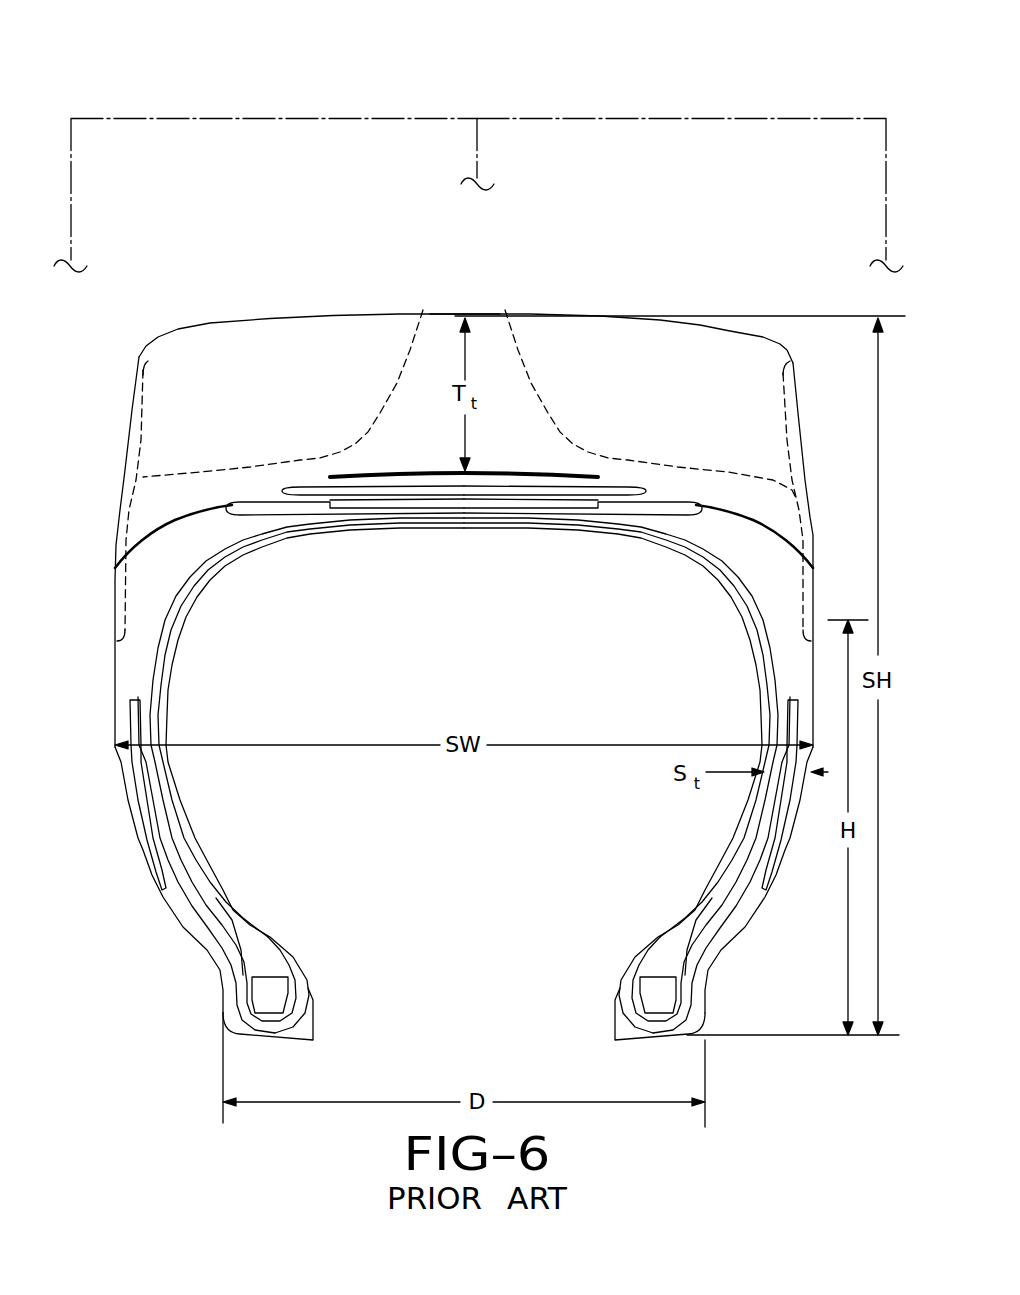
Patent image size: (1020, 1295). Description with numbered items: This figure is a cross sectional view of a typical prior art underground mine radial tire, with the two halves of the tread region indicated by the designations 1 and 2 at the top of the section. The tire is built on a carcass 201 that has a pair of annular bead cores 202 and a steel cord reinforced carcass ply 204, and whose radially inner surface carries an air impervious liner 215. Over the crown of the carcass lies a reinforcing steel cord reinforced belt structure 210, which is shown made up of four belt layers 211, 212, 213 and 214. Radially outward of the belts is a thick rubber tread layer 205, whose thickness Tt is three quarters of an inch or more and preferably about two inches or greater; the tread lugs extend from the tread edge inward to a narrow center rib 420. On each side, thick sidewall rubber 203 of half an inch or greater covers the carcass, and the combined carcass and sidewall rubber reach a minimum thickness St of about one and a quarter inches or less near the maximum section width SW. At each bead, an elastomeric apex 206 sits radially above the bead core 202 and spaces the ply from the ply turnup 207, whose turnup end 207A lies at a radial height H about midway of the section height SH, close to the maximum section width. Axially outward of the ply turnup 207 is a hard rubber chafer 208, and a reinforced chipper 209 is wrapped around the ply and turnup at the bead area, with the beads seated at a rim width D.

The tire tread region section 1 is at (229, 108).
The tire tread region section 2 is at (737, 108).
The carcass 201 is at (227, 872).
The bead core 202 is at (263, 989).
The sidewall rubber 203 is at (113, 693).
The carcass ply 204 is at (162, 790).
The tread layer 205 is at (523, 413).
The apex 206 is at (258, 947).
The ply turnup 207 is at (120, 763).
The ply turnup end 207A is at (133, 697).
The chafer 208 is at (190, 925).
The chipper 209 is at (313, 1020).
The belt structure 210 is at (497, 497).
The belt layer 211 is at (305, 490).
The belt layer 212 is at (322, 487).
The belt layer 213 is at (280, 487).
The belt layer 214 is at (379, 477).
The air impervious liner 215 is at (190, 834).
The center rib 420 is at (445, 340).